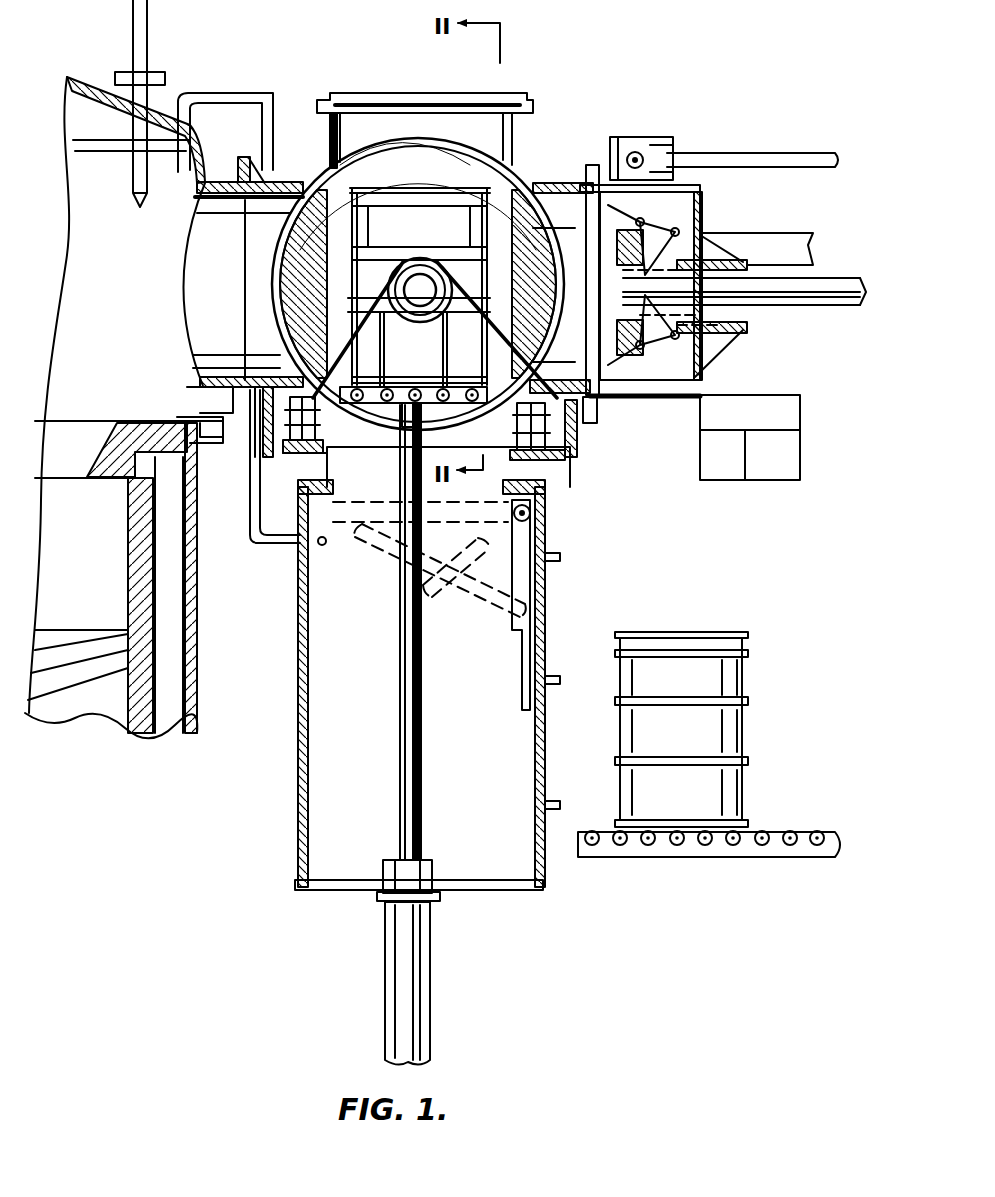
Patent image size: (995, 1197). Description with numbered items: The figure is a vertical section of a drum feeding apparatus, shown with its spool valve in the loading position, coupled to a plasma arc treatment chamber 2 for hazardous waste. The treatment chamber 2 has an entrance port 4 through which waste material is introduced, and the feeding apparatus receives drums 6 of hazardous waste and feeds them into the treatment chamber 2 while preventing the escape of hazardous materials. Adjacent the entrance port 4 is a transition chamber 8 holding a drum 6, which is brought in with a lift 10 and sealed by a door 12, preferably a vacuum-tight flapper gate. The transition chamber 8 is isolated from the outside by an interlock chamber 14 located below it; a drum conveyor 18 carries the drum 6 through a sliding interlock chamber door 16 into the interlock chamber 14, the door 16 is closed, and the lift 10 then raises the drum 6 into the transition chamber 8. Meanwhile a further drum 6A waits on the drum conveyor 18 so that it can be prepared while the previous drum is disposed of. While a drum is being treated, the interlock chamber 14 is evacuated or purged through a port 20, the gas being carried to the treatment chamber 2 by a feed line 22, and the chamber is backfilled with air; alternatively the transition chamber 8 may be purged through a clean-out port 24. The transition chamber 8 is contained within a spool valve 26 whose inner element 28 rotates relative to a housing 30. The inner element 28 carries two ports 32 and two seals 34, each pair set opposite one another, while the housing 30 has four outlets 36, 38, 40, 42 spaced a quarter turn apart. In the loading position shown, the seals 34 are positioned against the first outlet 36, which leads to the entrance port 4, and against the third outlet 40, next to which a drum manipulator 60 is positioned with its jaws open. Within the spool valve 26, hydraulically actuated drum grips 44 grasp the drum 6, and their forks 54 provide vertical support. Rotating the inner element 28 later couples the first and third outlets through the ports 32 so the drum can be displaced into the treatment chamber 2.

The treatment chamber 2 is at (197, 655).
The entrance port 4 is at (244, 281).
The drum 6 is at (483, 240).
The further drum 6A is at (748, 713).
The transition chamber 8 is at (478, 173).
The lift 10 is at (423, 687).
The door 12 is at (521, 644).
The interlock chamber 14 is at (317, 788).
The interlock chamber door 16 is at (547, 603).
The drum conveyor 18 is at (650, 858).
The port 20 is at (326, 546).
The feed line 22 is at (252, 514).
The clean-out port 24 is at (487, 97).
The spool valve 26 is at (323, 162).
The inner element 28 is at (435, 144).
The housing 30 is at (355, 150).
The ports 32 is at (400, 160).
The seals 34 is at (292, 236).
The first outlet 36 is at (252, 156).
The second outlet 38 is at (318, 116).
The third outlet 40 is at (588, 160).
The fourth outlet 42 is at (320, 466).
The drum grips 44 is at (372, 268).
The forks 54 is at (440, 352).
The drum manipulator 60 is at (766, 336).